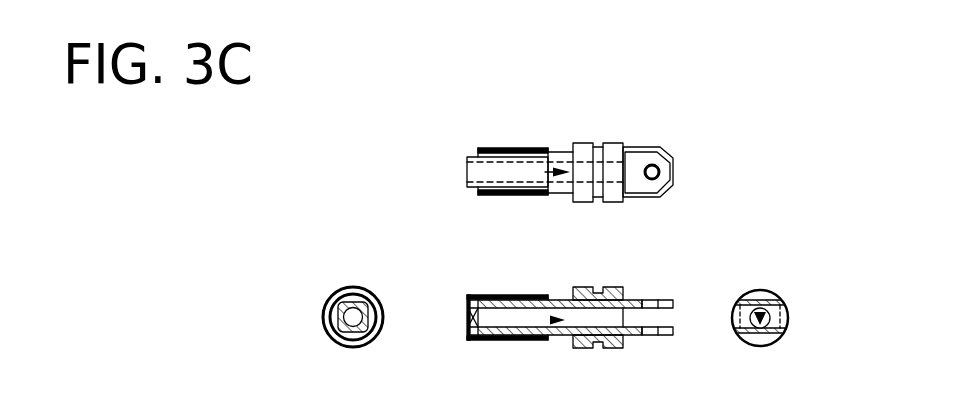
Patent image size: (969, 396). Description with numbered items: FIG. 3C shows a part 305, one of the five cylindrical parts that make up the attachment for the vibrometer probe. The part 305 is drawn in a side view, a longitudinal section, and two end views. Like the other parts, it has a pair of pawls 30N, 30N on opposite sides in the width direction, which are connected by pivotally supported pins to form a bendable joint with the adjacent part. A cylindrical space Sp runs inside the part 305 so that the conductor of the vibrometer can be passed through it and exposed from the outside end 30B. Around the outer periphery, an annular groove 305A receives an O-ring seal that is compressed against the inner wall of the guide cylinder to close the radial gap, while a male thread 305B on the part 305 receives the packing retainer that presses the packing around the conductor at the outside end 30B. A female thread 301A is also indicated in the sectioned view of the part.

The part 305 is at (710, 128).
The groove 305A is at (600, 146).
The male thread 305B is at (488, 148).
The outside end 30B is at (465, 172).
The female thread 301A is at (601, 287).
The pawls 30N is at (673, 332).
The cylindrical space Sp is at (548, 178).